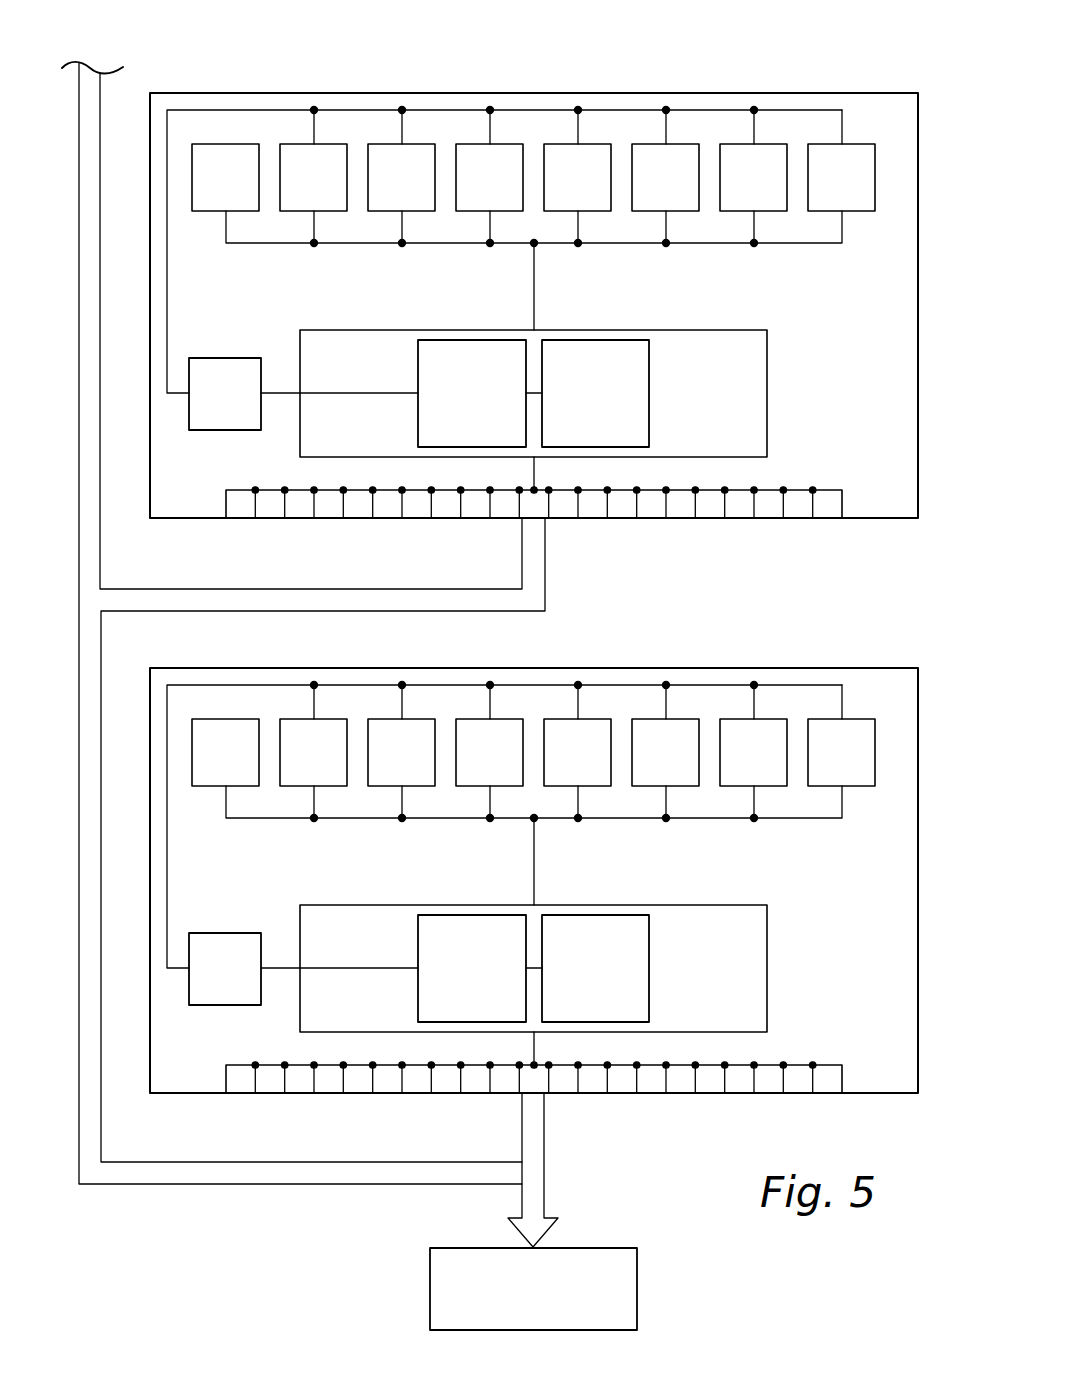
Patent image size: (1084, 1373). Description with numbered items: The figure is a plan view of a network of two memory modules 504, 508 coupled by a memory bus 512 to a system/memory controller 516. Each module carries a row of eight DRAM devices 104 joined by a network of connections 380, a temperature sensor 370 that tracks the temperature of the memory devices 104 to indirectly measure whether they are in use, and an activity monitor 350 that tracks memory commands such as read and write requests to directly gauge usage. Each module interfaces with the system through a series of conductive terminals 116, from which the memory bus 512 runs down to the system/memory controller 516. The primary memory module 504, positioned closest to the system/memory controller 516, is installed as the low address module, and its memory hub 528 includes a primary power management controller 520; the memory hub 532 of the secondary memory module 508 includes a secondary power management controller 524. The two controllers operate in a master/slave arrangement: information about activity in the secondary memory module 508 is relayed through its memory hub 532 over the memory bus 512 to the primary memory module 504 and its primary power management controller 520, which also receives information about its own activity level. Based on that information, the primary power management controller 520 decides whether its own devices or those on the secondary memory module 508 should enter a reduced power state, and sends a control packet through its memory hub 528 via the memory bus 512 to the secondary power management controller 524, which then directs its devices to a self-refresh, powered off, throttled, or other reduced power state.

The DRAM device 104 is at (859, 188).
The conductive terminals 116 is at (826, 489).
The activity monitor 350 is at (605, 344).
The temperature sensor 370 is at (247, 357).
The network of connections 380 is at (167, 278).
The primary memory module 504 is at (630, 638).
The secondary memory module 508 is at (631, 62).
The memory bus 512 is at (545, 1166).
The system/memory controller 516 is at (637, 1281).
The primary power management controller 520 is at (424, 915).
The secondary power management controller 524 is at (424, 340).
The memory hub 528 is at (734, 904).
The memory hub 532 is at (734, 329).